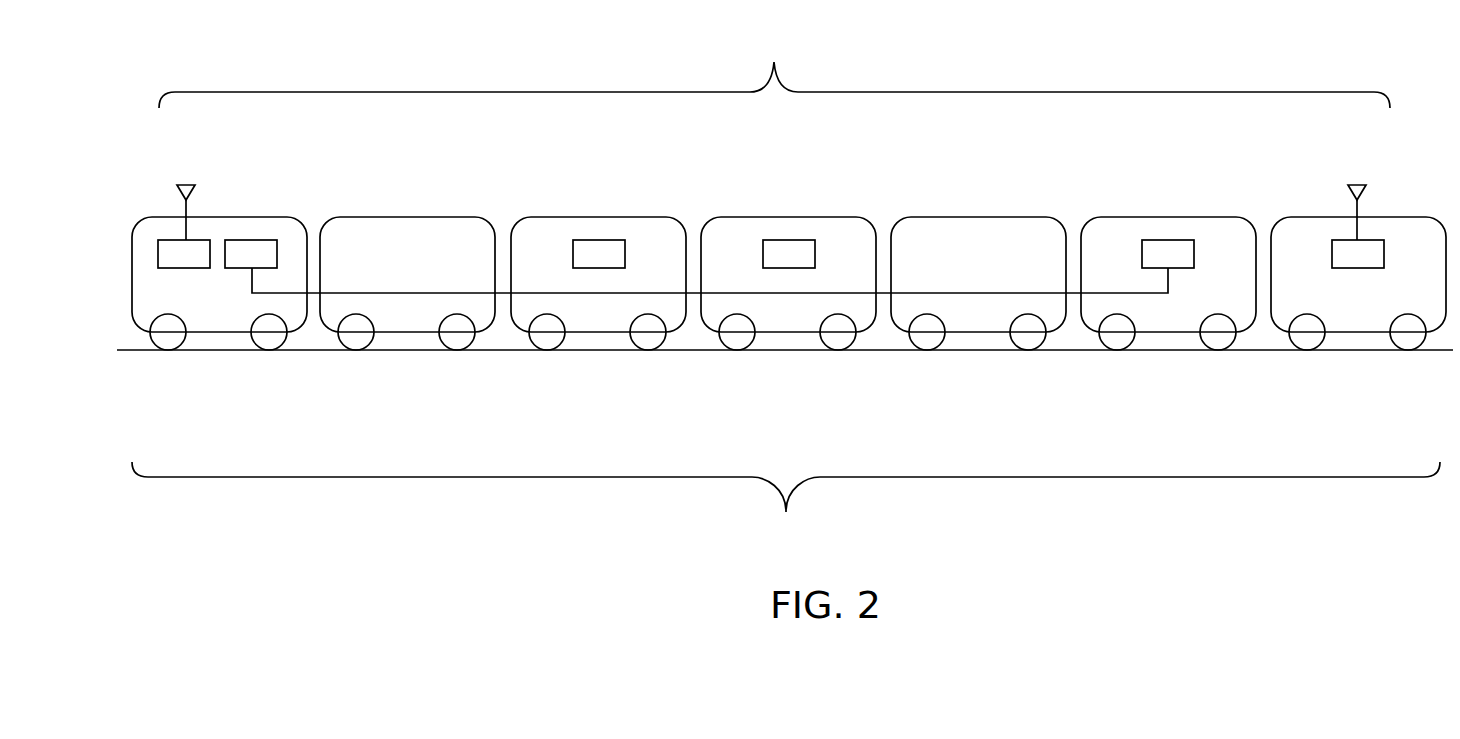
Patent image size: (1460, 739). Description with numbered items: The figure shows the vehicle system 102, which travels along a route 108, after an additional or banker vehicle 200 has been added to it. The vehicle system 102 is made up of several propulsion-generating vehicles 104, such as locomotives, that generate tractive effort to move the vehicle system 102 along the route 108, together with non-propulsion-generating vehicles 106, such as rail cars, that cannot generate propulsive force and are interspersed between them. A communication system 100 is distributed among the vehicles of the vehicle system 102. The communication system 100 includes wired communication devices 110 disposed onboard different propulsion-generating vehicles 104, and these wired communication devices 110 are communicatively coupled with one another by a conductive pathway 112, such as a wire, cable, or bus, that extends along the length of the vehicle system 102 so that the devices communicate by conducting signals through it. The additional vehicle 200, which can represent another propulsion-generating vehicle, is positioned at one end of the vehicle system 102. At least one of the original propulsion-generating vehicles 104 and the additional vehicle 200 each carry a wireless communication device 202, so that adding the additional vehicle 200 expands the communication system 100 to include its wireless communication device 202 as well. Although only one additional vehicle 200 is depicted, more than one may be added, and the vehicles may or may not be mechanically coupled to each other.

The communication system 100 is at (774, 69).
The vehicle system 102 is at (786, 505).
The propulsion-generating vehicle 104 is at (132, 245).
The non-propulsion-generating vehicle 106 is at (407, 217).
The route 108 is at (1260, 353).
The wired communication device 110 is at (252, 238).
The conductive pathway 112 is at (357, 293).
The additional or banker vehicle 200 is at (1317, 217).
The wireless communication device 202 is at (198, 238).